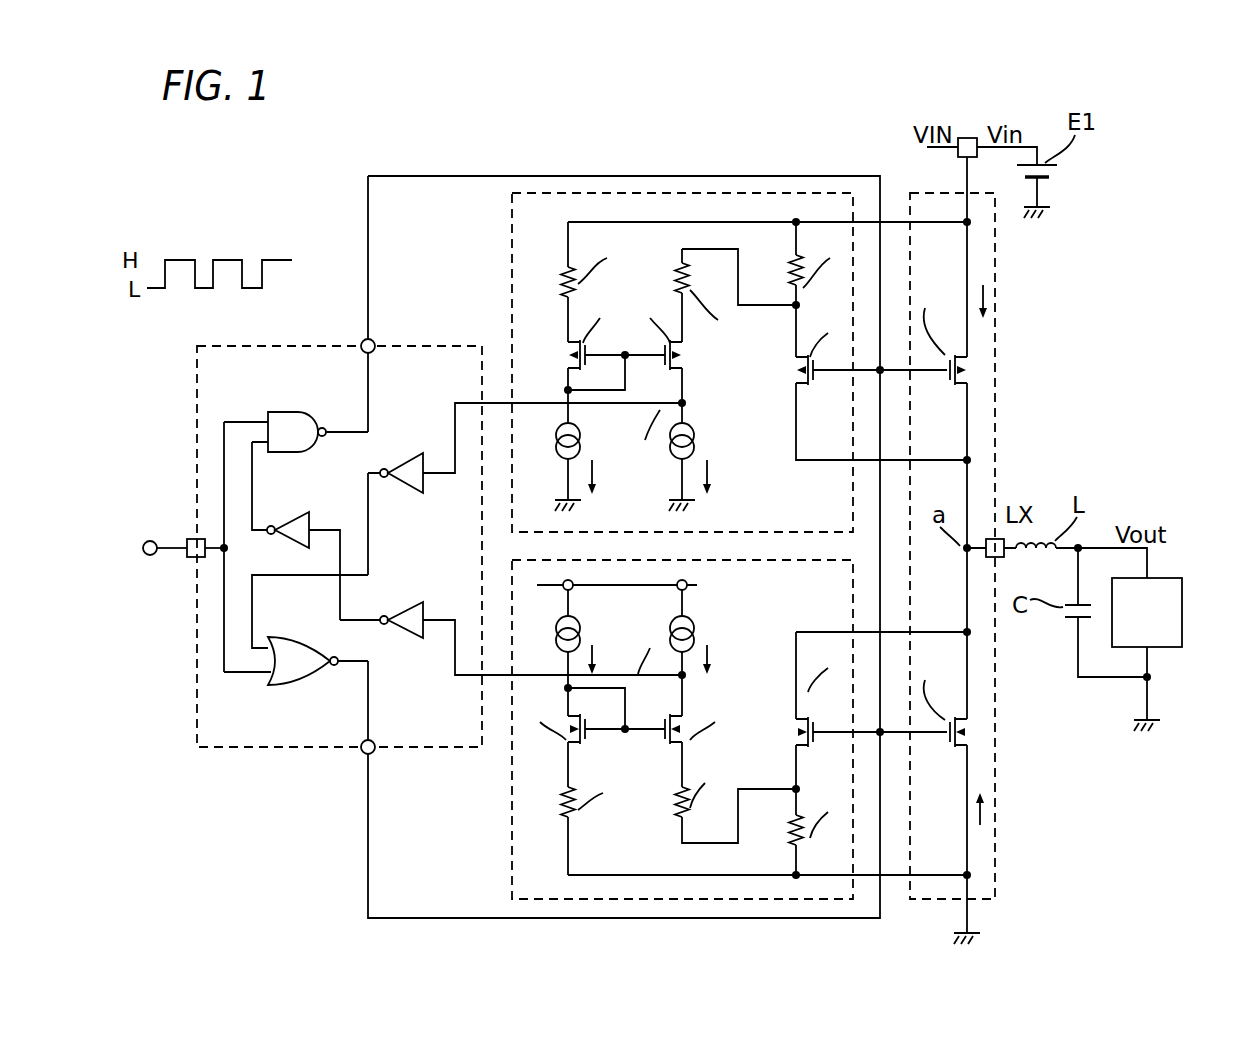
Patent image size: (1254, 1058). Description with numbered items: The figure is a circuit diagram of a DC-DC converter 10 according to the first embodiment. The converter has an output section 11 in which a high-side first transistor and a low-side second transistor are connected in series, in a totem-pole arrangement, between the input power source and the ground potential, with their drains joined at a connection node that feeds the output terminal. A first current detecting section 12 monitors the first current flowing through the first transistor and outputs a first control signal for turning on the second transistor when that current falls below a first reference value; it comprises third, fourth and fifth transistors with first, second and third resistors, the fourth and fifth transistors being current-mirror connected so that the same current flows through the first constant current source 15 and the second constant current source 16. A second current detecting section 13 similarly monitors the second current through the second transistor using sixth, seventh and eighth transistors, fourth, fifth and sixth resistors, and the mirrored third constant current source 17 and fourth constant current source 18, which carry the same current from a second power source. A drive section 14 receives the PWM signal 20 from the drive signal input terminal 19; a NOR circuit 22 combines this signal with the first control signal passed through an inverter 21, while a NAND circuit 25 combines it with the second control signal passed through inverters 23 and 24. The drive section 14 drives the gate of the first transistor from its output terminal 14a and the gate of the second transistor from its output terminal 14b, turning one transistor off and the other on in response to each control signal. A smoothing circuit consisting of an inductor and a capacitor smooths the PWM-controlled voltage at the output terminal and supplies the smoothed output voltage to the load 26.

The DC-DC converter 10 is at (835, 150).
The output section 11 is at (995, 357).
The first current detecting section 12 is at (707, 362).
The second current detecting section 13 is at (702, 729).
The drive section 14 is at (410, 346).
The output terminal 14a is at (362, 341).
The output terminal 14b is at (364, 754).
The first constant current source 15 is at (694, 447).
The second constant current source 16 is at (580, 447).
The third constant current source 17 is at (694, 633).
The fourth constant current source 18 is at (580, 633).
The drive signal input terminal 19 is at (187, 538).
The PWM signal 20 is at (237, 262).
The inverter 21 is at (398, 458).
The NOR circuit 22 is at (280, 688).
The inverter 23 is at (405, 640).
The inverter 24 is at (282, 514).
The NAND circuit 25 is at (288, 412).
The load 26 is at (1182, 615).